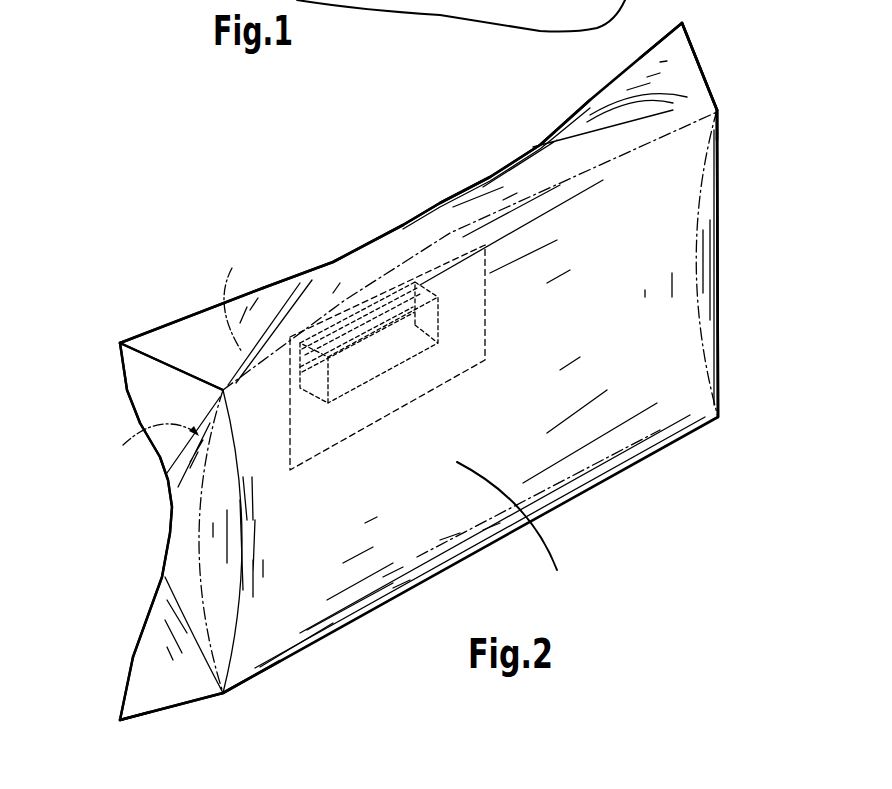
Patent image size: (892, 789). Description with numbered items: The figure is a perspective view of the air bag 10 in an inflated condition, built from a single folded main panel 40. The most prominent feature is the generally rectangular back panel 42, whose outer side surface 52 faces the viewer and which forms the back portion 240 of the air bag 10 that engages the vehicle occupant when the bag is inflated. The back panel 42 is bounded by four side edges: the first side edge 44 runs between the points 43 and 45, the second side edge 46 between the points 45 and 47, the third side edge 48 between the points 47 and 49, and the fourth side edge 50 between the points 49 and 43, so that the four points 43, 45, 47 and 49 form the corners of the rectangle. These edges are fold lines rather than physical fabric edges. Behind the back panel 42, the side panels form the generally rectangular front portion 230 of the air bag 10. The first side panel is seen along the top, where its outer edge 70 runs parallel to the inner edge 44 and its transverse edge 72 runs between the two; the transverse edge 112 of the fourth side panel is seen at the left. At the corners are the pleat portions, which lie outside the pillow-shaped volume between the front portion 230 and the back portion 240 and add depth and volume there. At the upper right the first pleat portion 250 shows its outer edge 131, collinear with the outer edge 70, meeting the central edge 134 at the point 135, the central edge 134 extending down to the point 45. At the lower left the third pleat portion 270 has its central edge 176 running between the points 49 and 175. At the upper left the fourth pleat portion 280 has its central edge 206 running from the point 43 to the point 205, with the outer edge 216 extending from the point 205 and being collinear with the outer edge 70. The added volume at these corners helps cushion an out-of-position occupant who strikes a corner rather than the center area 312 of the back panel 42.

The air bag 10 is at (603, 533).
The main panel 40 is at (632, 472).
The back panel 42 is at (632, 437).
The point 43 is at (220, 392).
The first side edge 44 is at (520, 190).
The point 45 is at (717, 110).
The second side edge 46 is at (707, 293).
The point 47 is at (718, 417).
The third side edge 48 is at (473, 557).
The point 49 is at (225, 695).
The fourth side edge 50 is at (200, 527).
The outer side surface 52 is at (655, 357).
The outer edge 70 is at (376, 238).
The transverse edge 72 is at (282, 320).
The transverse edge 112 is at (144, 449).
The outer edge 131 is at (600, 88).
The central edge 134 is at (700, 68).
The point 135 is at (682, 23).
The point 175 is at (118, 718).
The central edge 176 is at (170, 712).
The point 205 is at (120, 343).
The central edge 206 is at (163, 360).
The outer edge 216 is at (190, 318).
The front portion 230 is at (331, 258).
The back portion 240 is at (350, 600).
The first pleat portion 250 is at (575, 103).
The third pleat portion 270 is at (128, 640).
The fourth pleat portion 280 is at (113, 357).
The center area 312 is at (519, 529).